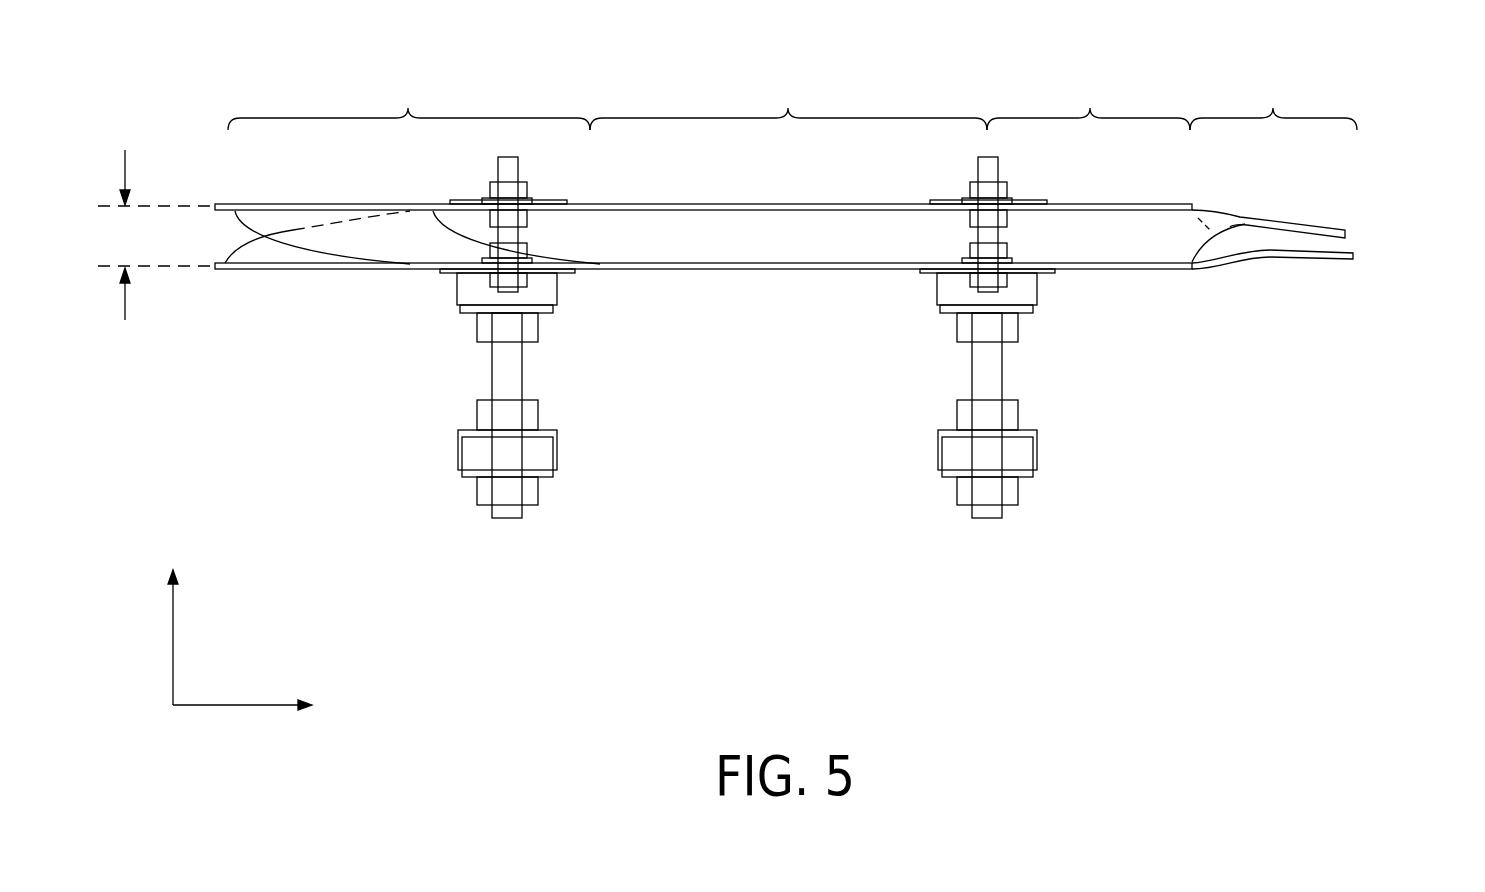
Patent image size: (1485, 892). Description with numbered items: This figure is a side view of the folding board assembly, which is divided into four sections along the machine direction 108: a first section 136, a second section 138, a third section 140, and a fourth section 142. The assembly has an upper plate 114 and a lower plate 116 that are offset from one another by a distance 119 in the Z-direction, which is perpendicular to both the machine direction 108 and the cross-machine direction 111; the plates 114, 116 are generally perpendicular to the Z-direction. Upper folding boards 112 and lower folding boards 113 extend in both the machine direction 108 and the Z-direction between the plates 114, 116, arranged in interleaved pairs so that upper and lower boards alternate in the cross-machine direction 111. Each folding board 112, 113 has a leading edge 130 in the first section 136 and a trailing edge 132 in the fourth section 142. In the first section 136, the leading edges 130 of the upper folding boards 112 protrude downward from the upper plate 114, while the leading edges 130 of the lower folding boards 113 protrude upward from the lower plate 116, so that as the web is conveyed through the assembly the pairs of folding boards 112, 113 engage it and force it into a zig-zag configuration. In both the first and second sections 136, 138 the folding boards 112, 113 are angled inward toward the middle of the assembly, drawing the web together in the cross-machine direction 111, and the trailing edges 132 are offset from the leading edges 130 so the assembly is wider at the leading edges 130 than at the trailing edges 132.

The machine direction 108 is at (270, 708).
The cross-machine direction 111 is at (180, 619).
The upper folding board 112 is at (272, 222).
The lower folding board 113 is at (1222, 253).
The upper plate 114 is at (757, 204).
The lower plate 116 is at (750, 270).
The distance 119 is at (156, 220).
The leading edge 130 is at (241, 243).
The trailing edge 132 is at (1364, 258).
The first section 136 is at (409, 104).
The second section 138 is at (788, 104).
The third section 140 is at (1088, 105).
The fourth section 142 is at (1273, 105).